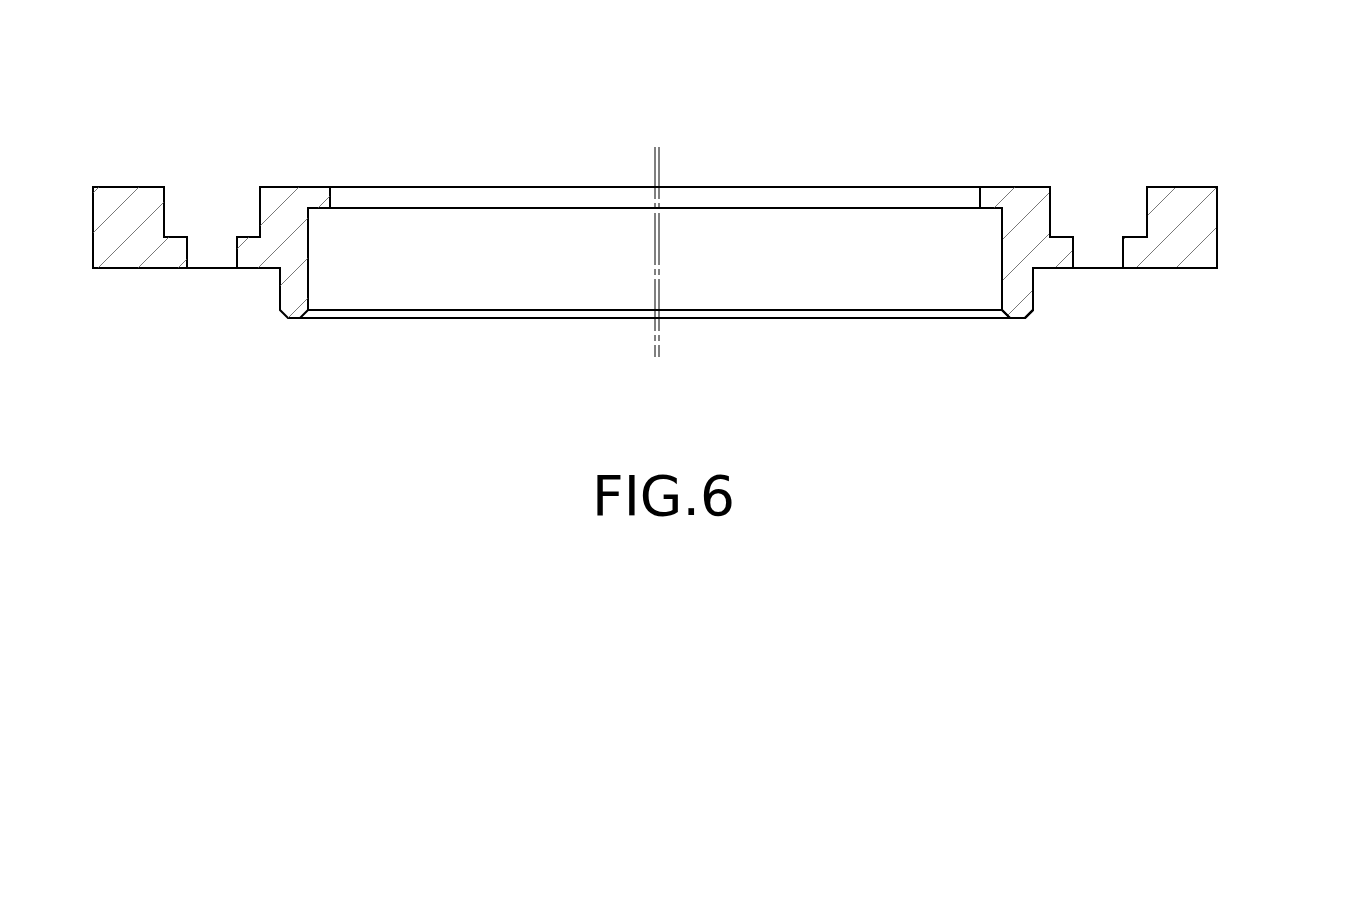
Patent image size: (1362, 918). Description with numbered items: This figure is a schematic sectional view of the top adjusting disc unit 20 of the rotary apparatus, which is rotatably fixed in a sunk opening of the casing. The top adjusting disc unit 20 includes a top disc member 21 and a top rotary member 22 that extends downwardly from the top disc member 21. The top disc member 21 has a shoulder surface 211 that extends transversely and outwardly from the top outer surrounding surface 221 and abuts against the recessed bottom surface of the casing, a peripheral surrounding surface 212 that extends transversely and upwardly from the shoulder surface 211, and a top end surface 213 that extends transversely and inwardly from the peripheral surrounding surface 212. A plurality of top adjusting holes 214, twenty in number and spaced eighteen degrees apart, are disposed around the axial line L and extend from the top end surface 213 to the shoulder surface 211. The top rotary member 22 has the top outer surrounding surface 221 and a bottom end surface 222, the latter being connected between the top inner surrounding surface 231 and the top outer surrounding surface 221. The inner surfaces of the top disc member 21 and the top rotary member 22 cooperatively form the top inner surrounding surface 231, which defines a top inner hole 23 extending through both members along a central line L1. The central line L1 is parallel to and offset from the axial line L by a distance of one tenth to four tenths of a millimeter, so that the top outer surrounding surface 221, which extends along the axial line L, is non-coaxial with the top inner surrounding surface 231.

The top adjusting disc unit 20 is at (671, 225).
The top disc member 21 is at (1188, 230).
The shoulder surface 211 is at (1162, 268).
The peripheral surrounding surface 212 is at (1217, 200).
The top end surface 213 is at (1167, 187).
The top adjusting holes 214 is at (1097, 237).
The top rotary member 22 is at (1017, 297).
The top outer surrounding surface 221 is at (1033, 278).
The bottom end surface 222 is at (1017, 320).
The top inner hole 23 is at (677, 255).
The top inner surrounding surface 231 is at (1002, 262).
The axial line L is at (660, 228).
The central line L1 is at (653, 160).